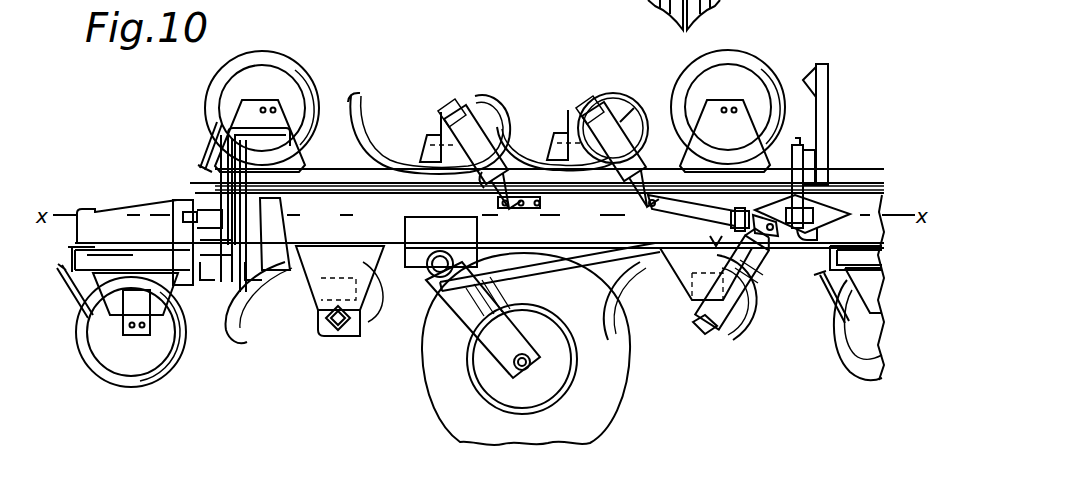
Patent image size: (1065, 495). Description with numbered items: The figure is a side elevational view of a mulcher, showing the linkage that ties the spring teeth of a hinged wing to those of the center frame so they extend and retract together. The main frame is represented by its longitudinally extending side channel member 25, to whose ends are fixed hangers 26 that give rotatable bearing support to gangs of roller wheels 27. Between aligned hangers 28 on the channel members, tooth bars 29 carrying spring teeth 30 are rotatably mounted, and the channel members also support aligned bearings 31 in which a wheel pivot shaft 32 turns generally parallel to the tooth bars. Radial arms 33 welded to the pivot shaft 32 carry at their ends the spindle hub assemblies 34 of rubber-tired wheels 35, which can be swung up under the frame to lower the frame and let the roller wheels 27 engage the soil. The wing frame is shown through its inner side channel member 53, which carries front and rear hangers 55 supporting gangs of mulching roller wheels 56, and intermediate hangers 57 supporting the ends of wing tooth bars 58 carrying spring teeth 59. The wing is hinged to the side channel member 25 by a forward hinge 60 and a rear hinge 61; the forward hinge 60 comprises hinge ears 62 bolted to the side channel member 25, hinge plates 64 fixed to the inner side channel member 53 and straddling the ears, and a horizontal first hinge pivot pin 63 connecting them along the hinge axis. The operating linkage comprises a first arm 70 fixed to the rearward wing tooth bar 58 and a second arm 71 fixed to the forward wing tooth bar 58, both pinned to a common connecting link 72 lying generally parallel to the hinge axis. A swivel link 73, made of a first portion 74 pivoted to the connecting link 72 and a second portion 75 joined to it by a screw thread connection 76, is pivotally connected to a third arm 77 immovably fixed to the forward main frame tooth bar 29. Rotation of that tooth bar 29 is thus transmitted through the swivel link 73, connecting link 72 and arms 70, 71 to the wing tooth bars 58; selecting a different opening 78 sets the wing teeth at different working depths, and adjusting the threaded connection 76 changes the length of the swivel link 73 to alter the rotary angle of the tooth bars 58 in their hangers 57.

The side channel member 25 is at (884, 232).
The hanger 26 is at (180, 284).
The roller wheel 27 is at (118, 381).
The hanger 28 is at (318, 306).
The tooth bar 29 is at (328, 322).
The spring tooth 30 is at (246, 342).
The bearing 31 is at (428, 246).
The wheel pivot shaft 32 is at (428, 280).
The radial arm 33 is at (430, 335).
The spindle hub assembly 34 is at (514, 368).
The rubber-tired wheel 35 is at (418, 378).
The inner side channel member 53 is at (355, 168).
The hanger 55 is at (283, 162).
The mulching roller wheel 56 is at (296, 65).
The intermediate hanger 57 is at (440, 128).
The tooth bar 58 is at (430, 140).
The spring tooth 59 is at (395, 90).
The forward hinge 60 is at (823, 193).
The rear hinge 61 is at (190, 186).
The hinge ear 62 is at (809, 247).
The first hinge pivot pin 63 is at (815, 200).
The hinge plate 64 is at (790, 152).
The first arm 70 is at (481, 183).
The second arm 71 is at (622, 112).
The connecting link 72 is at (572, 212).
The swivel link 73 is at (714, 232).
The first portion 74 is at (680, 214).
The second portion 75 is at (768, 245).
The screw thread connection 76 is at (738, 212).
The third arm 77 is at (750, 272).
The opening 78 is at (540, 208).